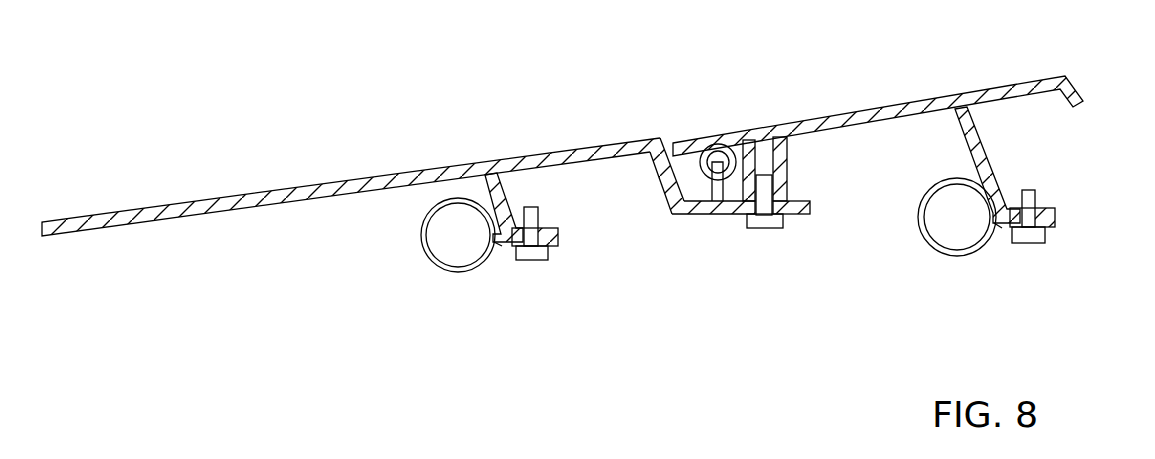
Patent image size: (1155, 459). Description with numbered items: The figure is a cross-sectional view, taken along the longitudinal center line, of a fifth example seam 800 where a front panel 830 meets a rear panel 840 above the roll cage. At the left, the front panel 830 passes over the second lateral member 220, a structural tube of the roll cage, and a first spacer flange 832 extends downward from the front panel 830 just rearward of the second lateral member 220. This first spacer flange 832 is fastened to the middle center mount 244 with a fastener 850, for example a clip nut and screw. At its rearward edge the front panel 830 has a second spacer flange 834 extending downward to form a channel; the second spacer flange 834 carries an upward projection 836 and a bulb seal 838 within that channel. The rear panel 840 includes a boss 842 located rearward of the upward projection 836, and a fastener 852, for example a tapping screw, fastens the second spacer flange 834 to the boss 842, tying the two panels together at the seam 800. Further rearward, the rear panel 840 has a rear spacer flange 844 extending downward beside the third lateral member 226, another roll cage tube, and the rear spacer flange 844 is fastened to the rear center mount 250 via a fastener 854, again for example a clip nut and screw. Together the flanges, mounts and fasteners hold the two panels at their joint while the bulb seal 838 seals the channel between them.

The seam 800 is at (585, 223).
The front panel 830 is at (351, 173).
The first spacer flange 832 is at (404, 183).
The second spacer flange 834 is at (625, 214).
The upward projection 836 is at (721, 255).
The bulb seal 838 is at (691, 148).
The rear panel 840 is at (878, 110).
The boss 842 is at (820, 169).
The rear spacer flange 844 is at (1030, 165).
The fastener 850 is at (490, 298).
The fastener 852 is at (730, 259).
The fastener 854 is at (1069, 250).
The second lateral member 220 is at (369, 284).
The third lateral member 226 is at (905, 223).
The middle center mount 244 is at (442, 301).
The rear center mount 250 is at (942, 272).